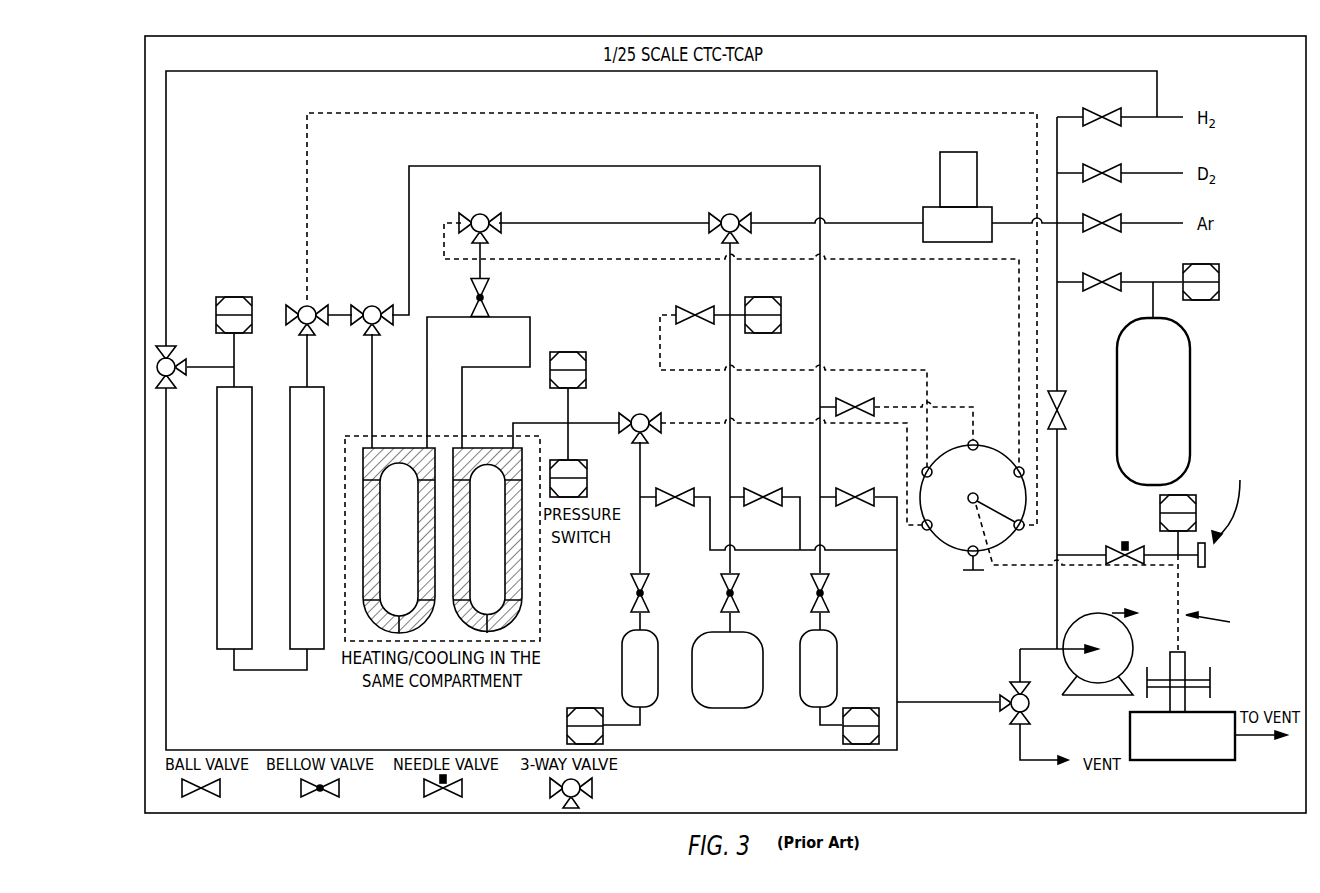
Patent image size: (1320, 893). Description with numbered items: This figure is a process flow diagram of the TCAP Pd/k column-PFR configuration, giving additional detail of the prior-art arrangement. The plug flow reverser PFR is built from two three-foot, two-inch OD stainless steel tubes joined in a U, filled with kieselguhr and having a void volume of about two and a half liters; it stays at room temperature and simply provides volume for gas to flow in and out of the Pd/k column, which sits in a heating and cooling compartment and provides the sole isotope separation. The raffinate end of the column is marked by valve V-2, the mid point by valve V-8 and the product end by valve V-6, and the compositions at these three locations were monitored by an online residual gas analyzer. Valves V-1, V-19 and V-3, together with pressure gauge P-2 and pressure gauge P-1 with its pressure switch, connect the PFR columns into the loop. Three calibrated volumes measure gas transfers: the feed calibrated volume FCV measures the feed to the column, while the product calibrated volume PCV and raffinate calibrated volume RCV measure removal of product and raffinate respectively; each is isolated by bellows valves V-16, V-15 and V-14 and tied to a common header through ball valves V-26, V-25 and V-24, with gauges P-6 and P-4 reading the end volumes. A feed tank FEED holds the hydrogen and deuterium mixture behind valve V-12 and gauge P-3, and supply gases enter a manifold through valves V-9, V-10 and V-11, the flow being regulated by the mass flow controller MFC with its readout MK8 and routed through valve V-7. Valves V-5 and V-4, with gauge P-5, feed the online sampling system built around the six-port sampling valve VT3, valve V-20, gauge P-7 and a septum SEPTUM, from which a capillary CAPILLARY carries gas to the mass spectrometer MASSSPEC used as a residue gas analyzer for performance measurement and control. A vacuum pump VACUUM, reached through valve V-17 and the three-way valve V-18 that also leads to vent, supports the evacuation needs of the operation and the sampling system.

The valve V-1 is at (372, 310).
The valve at raffinate end V-2 is at (295, 320).
The valve V-3 is at (502, 298).
The valve V-4 is at (855, 398).
The valve V-5 is at (695, 304).
The valve at product end V-6 is at (640, 418).
The valve V-7 is at (730, 218).
The valve at mid point V-8 is at (480, 218).
The valve V-9 is at (1102, 106).
The valve V-10 is at (1102, 162).
The valve V-11 is at (1102, 213).
The valve V-12 is at (1102, 271).
The valve V-14 is at (797, 593).
The valve V-15 is at (708, 593).
The valve V-16 is at (619, 593).
The valve V-17 is at (1078, 410).
The valve V-18 is at (997, 716).
The valve V-19 is at (182, 360).
The valve V-20 is at (1125, 545).
The valve V-24 is at (855, 489).
The valve V-25 is at (763, 489).
The valve V-26 is at (675, 489).
The pressure gauge P-1 is at (568, 360).
The pressure gauge P-2 is at (234, 305).
The pressure gauge P-3 is at (1219, 282).
The pressure gauge P-4 is at (861, 713).
The pressure gauge P-5 is at (763, 304).
The pressure gauge P-6 is at (585, 713).
The pressure gauge P-7 is at (1195, 513).
The plug flow reverser PFR is at (274, 564).
The product calibrated volume PCV is at (640, 692).
The feed calibrated volume FCV is at (727, 693).
The raffinate calibrated volume RCV is at (818, 692).
The mass flow controller readout MK8 is at (958, 179).
The mass flow controller MFC is at (957, 224).
The sampling valve VT3 is at (973, 511).
The feed tank FEED is at (1153, 401).
The septum SEPTUM is at (1228, 511).
The vacuum pump VACUUM is at (1054, 654).
The capillary CAPILLARY is at (1205, 671).
The mass spectrometer MASSSPEC is at (1182, 736).